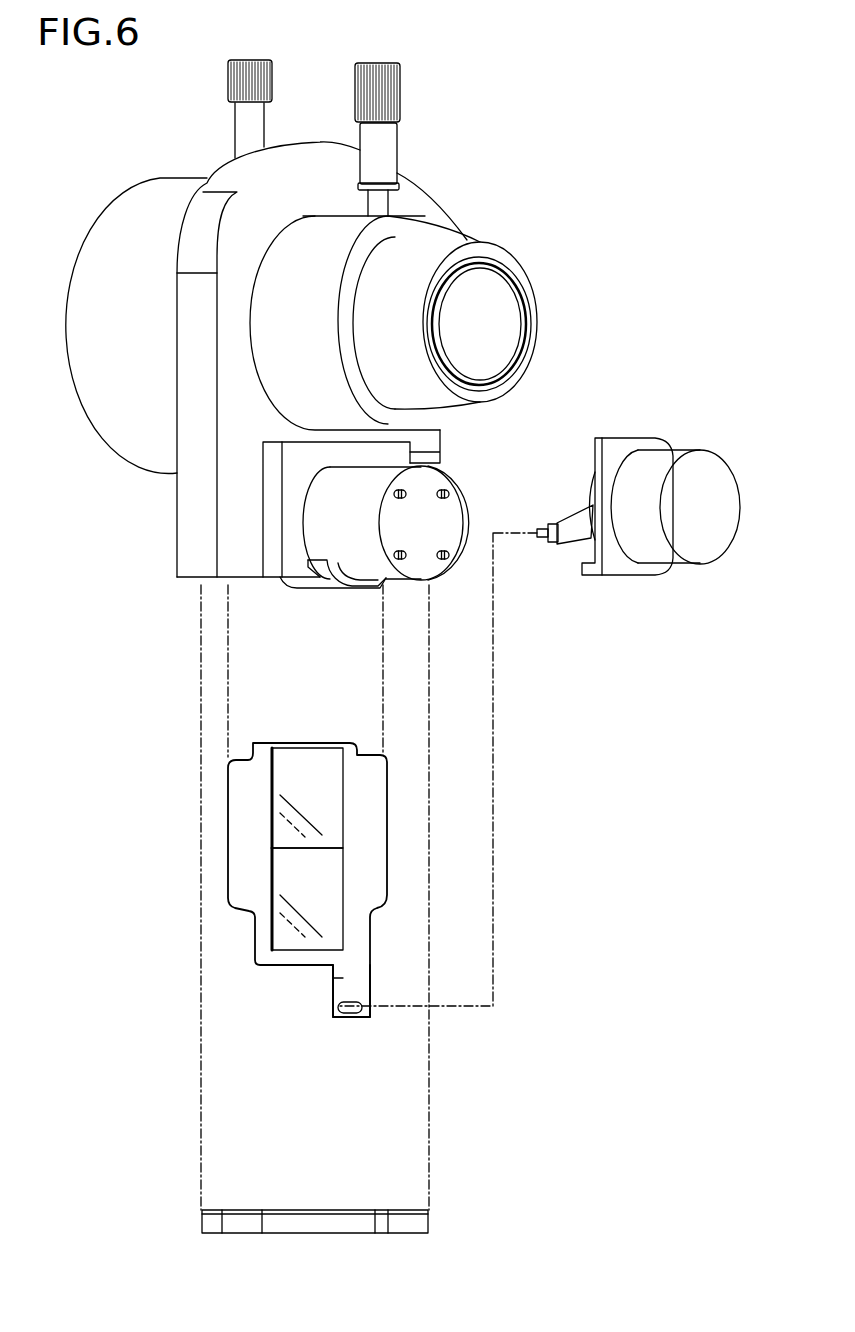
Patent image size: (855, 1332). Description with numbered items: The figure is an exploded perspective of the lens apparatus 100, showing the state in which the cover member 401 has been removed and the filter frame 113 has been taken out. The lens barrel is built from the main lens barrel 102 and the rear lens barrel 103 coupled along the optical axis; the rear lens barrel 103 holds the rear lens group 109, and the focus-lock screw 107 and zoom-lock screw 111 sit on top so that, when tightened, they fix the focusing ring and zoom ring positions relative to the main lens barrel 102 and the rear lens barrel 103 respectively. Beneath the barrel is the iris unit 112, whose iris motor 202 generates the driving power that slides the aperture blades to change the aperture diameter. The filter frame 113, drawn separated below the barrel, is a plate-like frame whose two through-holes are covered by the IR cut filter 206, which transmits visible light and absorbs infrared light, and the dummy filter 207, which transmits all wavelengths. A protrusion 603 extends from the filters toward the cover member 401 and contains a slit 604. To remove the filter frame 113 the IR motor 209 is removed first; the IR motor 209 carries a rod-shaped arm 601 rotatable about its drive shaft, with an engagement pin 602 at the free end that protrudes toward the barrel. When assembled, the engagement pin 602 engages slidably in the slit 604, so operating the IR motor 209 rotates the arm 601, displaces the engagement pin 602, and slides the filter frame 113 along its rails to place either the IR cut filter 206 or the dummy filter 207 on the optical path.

The lens apparatus 100 is at (628, 58).
The main lens barrel 102 is at (183, 172).
The rear lens barrel 103 is at (466, 234).
The focus-lock screw 107 is at (251, 60).
The rear lens group 109 is at (510, 313).
The zoom-lock screw 111 is at (378, 62).
The iris unit 112 is at (440, 586).
The filter frame 113 is at (219, 864).
The iris motor 202 is at (432, 482).
The IR cut filter 206 is at (280, 782).
The dummy filter 207 is at (283, 938).
The IR motor 209 is at (727, 507).
The cover member 401 is at (430, 1216).
The arm 601 is at (571, 508).
The engagement pin 602 is at (545, 524).
The protrusion 603 is at (333, 980).
The slit 604 is at (350, 1015).